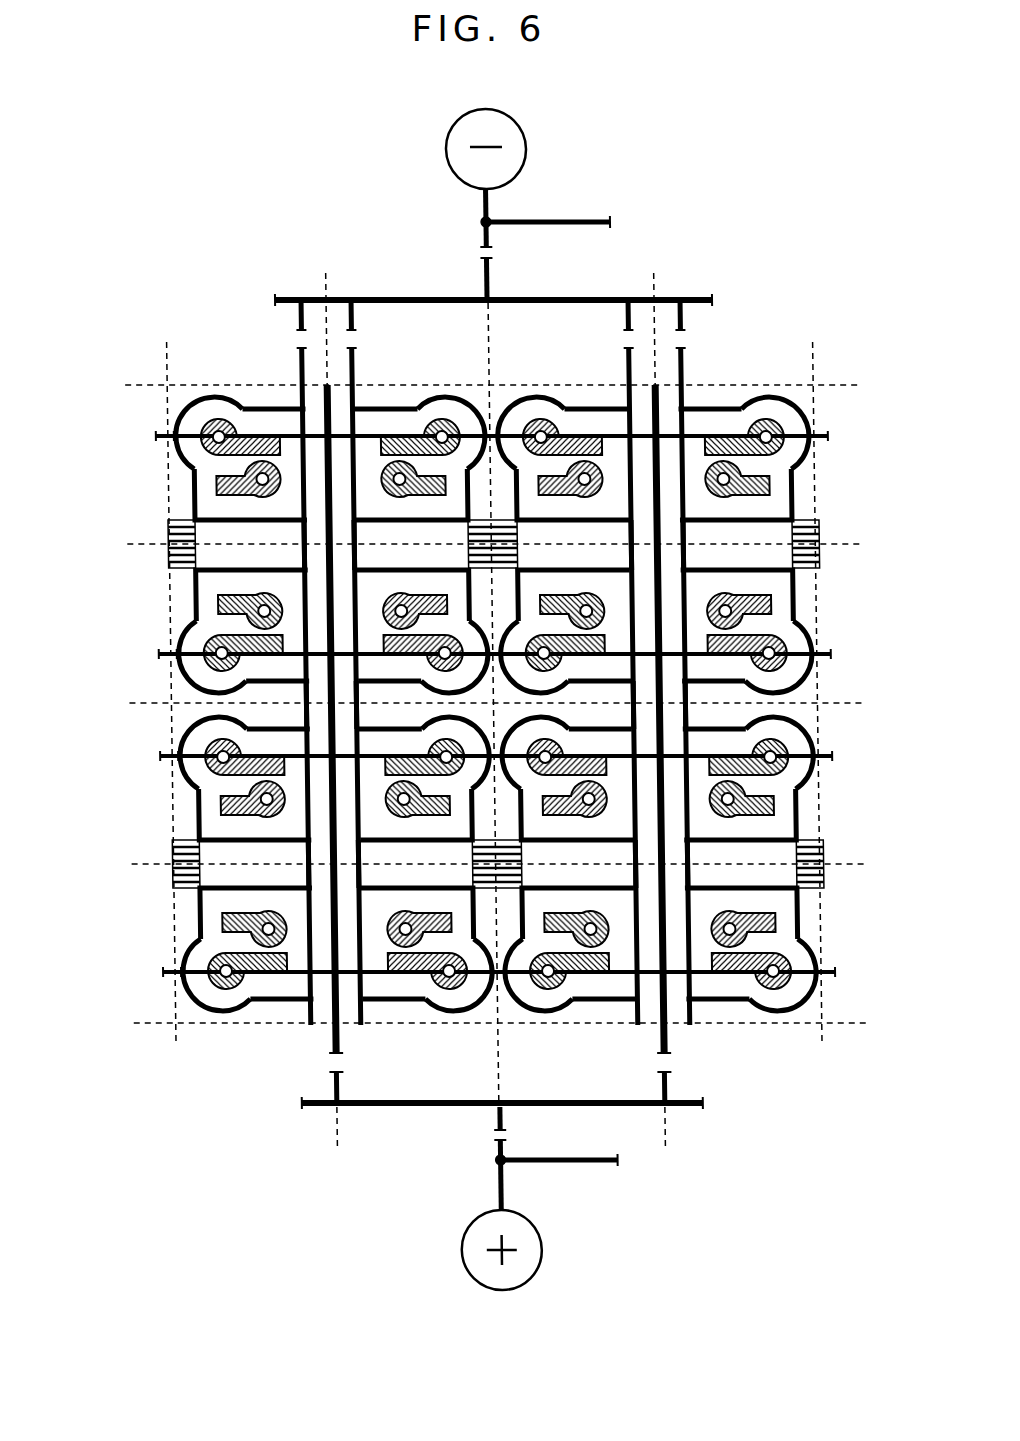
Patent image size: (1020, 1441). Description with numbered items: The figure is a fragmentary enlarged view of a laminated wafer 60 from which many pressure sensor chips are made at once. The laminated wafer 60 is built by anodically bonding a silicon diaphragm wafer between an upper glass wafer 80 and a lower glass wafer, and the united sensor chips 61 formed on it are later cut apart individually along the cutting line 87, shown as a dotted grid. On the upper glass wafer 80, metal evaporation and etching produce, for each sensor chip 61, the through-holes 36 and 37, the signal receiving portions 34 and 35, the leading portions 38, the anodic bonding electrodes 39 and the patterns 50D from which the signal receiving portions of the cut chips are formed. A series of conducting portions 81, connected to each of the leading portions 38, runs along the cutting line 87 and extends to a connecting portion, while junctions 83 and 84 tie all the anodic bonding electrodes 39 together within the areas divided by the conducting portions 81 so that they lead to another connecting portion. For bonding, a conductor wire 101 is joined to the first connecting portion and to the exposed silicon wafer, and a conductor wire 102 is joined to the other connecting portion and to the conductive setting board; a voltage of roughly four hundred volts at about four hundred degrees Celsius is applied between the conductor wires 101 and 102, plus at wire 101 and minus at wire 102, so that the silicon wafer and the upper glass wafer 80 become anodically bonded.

The laminated wafer 60 is at (100, 240).
The upper glass wafer 80 is at (133, 328).
The sensor chip 61 is at (500, 690).
The anodic bonding electrode 39 is at (210, 398).
The leading portion 38 is at (278, 430).
The junction 83 is at (497, 692).
The cutting line 87 is at (838, 385).
The signal receiving portion 35 is at (190, 427).
The through-hole 37 is at (188, 450).
The signal receiving portion 34 is at (203, 483).
The through-hole 36 is at (234, 500).
The pattern for forming the signal receiving portion 50D is at (160, 560).
The junction 84 is at (295, 546).
The conducting portion 81 is at (320, 1040).
The conductor wire 101 is at (490, 1190).
The conductor wire 102 is at (487, 208).